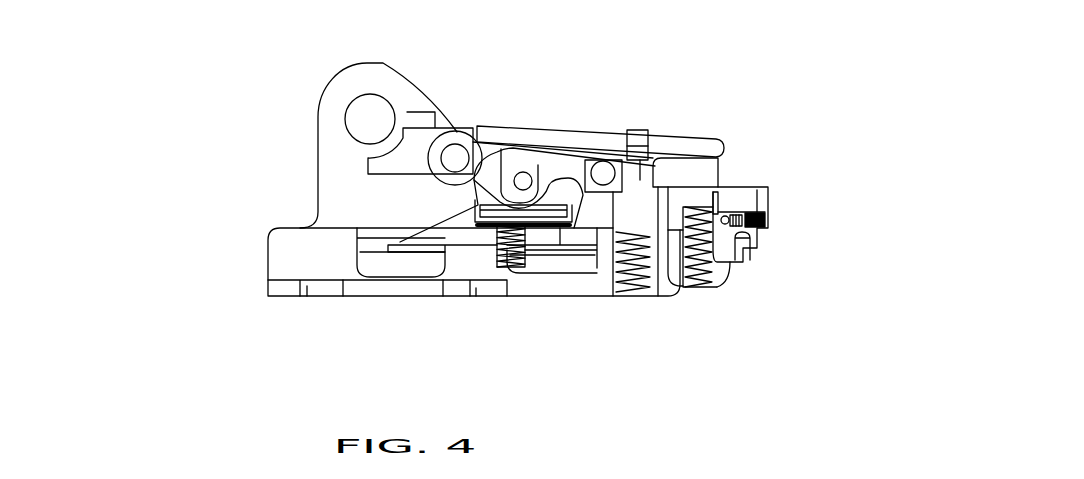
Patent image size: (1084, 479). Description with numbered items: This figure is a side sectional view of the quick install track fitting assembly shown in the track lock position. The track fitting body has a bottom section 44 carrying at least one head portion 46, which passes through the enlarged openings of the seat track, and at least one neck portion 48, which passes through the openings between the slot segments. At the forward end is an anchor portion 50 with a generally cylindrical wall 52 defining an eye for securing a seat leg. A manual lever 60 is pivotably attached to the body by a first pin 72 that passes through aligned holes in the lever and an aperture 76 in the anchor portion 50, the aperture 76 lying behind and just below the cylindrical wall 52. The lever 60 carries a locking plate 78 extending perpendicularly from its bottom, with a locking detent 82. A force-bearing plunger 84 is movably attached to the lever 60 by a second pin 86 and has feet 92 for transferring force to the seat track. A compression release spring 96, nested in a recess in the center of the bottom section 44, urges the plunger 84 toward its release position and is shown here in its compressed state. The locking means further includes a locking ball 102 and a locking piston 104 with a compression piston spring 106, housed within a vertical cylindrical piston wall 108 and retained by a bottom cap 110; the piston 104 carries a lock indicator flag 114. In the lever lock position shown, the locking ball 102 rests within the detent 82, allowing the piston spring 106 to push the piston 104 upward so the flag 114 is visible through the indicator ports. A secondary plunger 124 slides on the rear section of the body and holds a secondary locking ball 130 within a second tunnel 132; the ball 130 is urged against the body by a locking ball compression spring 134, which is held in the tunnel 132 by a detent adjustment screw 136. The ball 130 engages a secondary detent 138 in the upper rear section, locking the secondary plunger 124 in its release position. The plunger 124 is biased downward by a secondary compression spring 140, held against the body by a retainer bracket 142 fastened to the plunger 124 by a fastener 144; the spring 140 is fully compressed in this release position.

The bottom section 44 is at (268, 257).
The head portion 46 is at (305, 295).
The neck portion 48 is at (397, 295).
The anchor portion 50 is at (318, 138).
The cylindrical wall 52 is at (378, 140).
The manual lever 60 is at (583, 132).
The first pin 72 is at (458, 152).
The aperture 76 is at (452, 152).
The locking plate 78 is at (601, 235).
The locking detent 82 is at (597, 172).
The force-bearing plunger 84 is at (573, 202).
The second pin 86 is at (522, 174).
The feet 92 is at (372, 260).
The compression release spring 96 is at (493, 236).
The locking ball 102 is at (607, 157).
The locking piston 104 is at (643, 178).
The compression piston spring 106 is at (658, 280).
The vertical cylindrical piston wall 108 is at (683, 295).
The bottom cap 110 is at (633, 293).
The lock indicator flag 114 is at (640, 130).
The secondary plunger 124 is at (768, 189).
The secondary locking ball 130 is at (733, 212).
The second tunnel 132 is at (742, 212).
The locking ball compression spring 134 is at (748, 212).
The detent adjustment screw 136 is at (768, 222).
The secondary detent 138 is at (721, 207).
The secondary compression spring 140 is at (704, 208).
The retainer bracket 142 is at (717, 275).
The fastener 144 is at (743, 247).